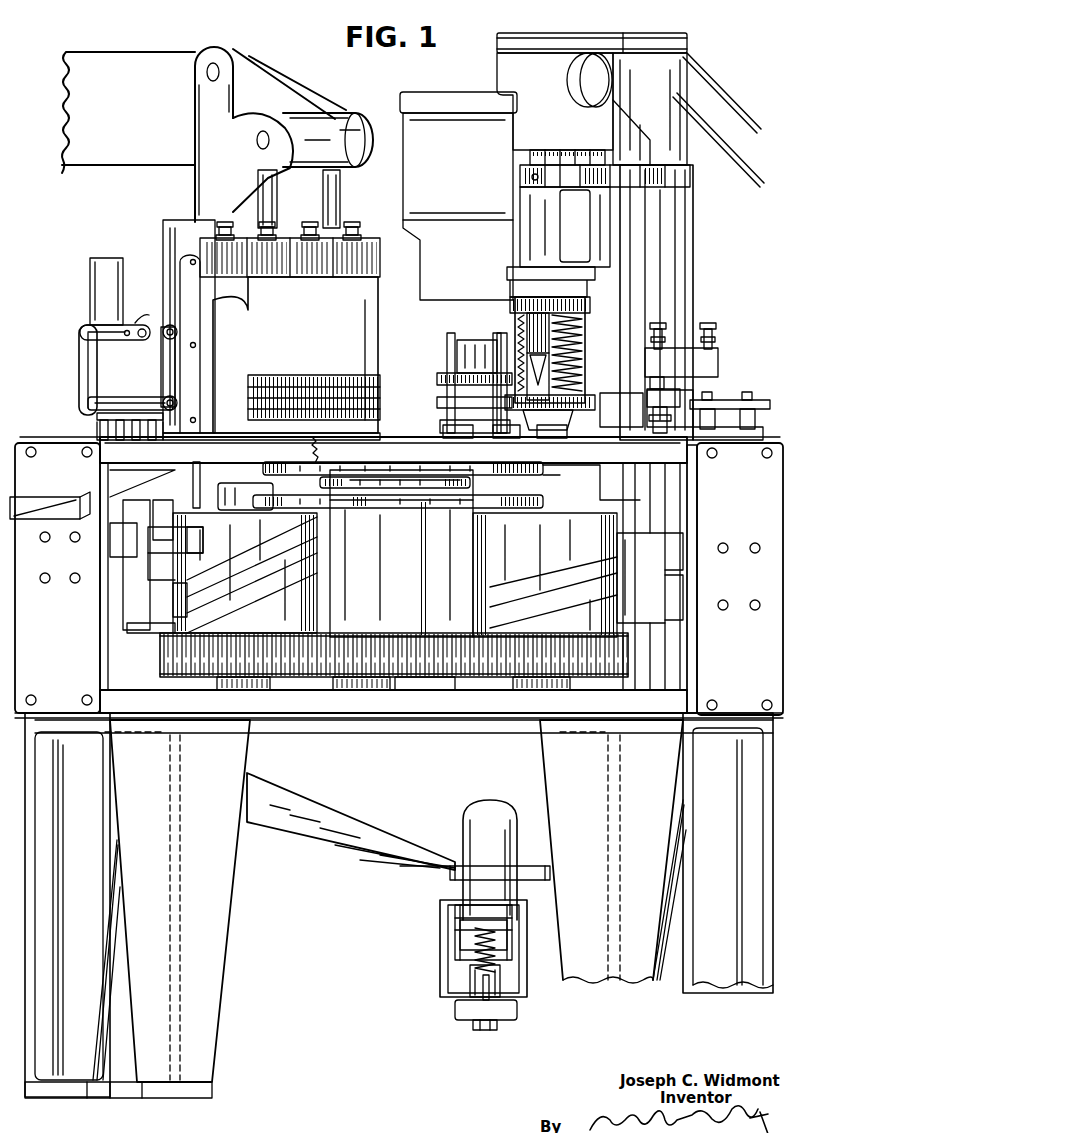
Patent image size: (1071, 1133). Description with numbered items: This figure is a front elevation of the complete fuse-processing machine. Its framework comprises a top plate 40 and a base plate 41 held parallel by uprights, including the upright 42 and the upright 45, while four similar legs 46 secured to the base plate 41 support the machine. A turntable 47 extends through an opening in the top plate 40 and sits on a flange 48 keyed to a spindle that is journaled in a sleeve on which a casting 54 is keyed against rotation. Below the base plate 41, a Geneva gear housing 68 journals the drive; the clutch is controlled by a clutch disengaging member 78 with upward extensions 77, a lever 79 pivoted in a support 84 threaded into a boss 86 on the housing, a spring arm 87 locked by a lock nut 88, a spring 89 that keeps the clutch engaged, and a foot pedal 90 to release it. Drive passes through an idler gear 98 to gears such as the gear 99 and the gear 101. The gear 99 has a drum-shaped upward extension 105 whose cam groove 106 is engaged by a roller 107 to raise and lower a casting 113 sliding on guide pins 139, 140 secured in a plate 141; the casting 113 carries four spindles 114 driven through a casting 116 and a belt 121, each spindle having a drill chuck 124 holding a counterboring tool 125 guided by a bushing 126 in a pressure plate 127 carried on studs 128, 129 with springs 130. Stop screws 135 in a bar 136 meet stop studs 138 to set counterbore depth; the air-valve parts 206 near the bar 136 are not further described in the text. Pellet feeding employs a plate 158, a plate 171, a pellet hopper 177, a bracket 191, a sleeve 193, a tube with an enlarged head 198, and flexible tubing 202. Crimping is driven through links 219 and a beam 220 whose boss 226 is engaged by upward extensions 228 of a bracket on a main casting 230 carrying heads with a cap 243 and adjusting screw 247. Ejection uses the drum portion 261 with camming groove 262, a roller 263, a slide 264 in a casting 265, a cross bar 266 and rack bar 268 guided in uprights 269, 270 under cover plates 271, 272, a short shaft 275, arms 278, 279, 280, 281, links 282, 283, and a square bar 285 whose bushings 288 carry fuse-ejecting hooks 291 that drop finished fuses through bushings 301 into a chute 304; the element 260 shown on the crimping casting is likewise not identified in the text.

The top plate 40 is at (662, 468).
The base plate 41 is at (465, 730).
The upright 42 is at (728, 715).
The upright 45 is at (62, 690).
The legs 46 is at (152, 1078).
The turntable 47 is at (440, 378).
The flange 48 is at (426, 467).
The casting 54 is at (427, 522).
The Geneva gear housing 68 is at (380, 860).
The upward extensions 77 is at (443, 955).
The clutch disengaging member 78 is at (505, 990).
The lever 79 is at (480, 1032).
The support 84 is at (485, 995).
The boss 86 is at (470, 885).
The spring arm 87 is at (485, 932).
The lock nut 88 is at (475, 938).
The spring 89 is at (485, 975).
The foot pedal 90 is at (518, 1012).
The idler gear 98 is at (361, 684).
The gear 99 is at (628, 672).
The gear 101 is at (206, 684).
The drum-shaped upward extension 105 is at (530, 575).
The cam groove 106 is at (482, 582).
The roller 107 is at (600, 578).
The casting 113 is at (690, 215).
The spindles 114 is at (535, 160).
The casting 116 is at (530, 128).
The belt 121 is at (739, 112).
The drill chuck 124 is at (540, 300).
The counterboring tool 125 is at (500, 397).
The bushing 126 is at (568, 418).
The pressure plate 127 is at (580, 392).
The stud 128 is at (525, 330).
The stud 129 is at (583, 330).
The compressible springs 130 is at (576, 350).
The stop screws 135 is at (660, 327).
The bar 136 is at (718, 352).
The stop studs 138 is at (676, 428).
The guide pin 139 is at (626, 198).
The guide pin 140 is at (690, 183).
The plate 141 is at (746, 460).
The plate 158 is at (520, 438).
The plate 171 is at (450, 383).
The pellet hopper 177 is at (404, 182).
The bracket 191 is at (450, 383).
The sleeve 193 is at (476, 438).
The enlarged head 198 is at (559, 438).
The flexible tubing 202 is at (449, 333).
The bracket 206 is at (753, 395).
The links 219 is at (200, 93).
The beam 220 is at (132, 56).
The boss 226 is at (326, 172).
The upward extensions 228 is at (218, 140).
The main casting 230 is at (367, 297).
The cap 243 is at (227, 265).
The adjusting screw 247 is at (248, 214).
The gear stack 260 is at (349, 383).
The drum portion 261 is at (266, 573).
The camming groove 262 is at (285, 525).
The roller 263 is at (170, 605).
The slide 264 is at (160, 636).
The casting 265 is at (118, 583).
The cross bar 266 is at (175, 518).
The rack bar 268 is at (201, 472).
The upright 269 is at (179, 258).
The upright 270 is at (80, 274).
The cover plate 271 is at (240, 316).
The cover plate 272 is at (105, 259).
The short shaft 275 is at (146, 323).
The arm 278 is at (105, 324).
The arm 279 is at (180, 331).
The arm 280 is at (106, 397).
The arm 281 is at (180, 399).
The link 282 is at (80, 352).
The link 283 is at (178, 364).
The square bar 285 is at (130, 374).
The bushings 288 is at (98, 428).
The fuse-ejecting hooks 291 is at (159, 446).
The bushings 301 is at (125, 445).
The chute 304 is at (118, 474).